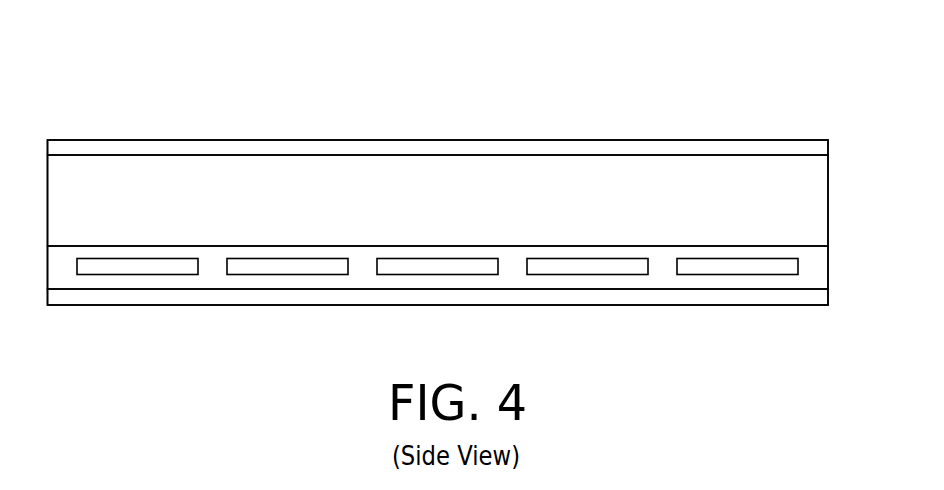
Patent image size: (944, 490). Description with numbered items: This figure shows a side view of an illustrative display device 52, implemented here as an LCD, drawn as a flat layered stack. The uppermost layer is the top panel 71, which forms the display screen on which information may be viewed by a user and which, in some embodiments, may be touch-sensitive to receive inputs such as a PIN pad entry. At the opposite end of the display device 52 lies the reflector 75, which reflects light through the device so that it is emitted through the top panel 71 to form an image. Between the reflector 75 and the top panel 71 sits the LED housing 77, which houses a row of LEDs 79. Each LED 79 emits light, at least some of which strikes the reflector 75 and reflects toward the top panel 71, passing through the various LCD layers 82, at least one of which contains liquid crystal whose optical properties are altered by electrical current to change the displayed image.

The display device 52 is at (581, 50).
The top panel 71 is at (805, 141).
The LCD layers 82 is at (828, 168).
The LED housing 77 is at (828, 267).
The reflector 75 is at (677, 306).
The LED 79 is at (127, 258).